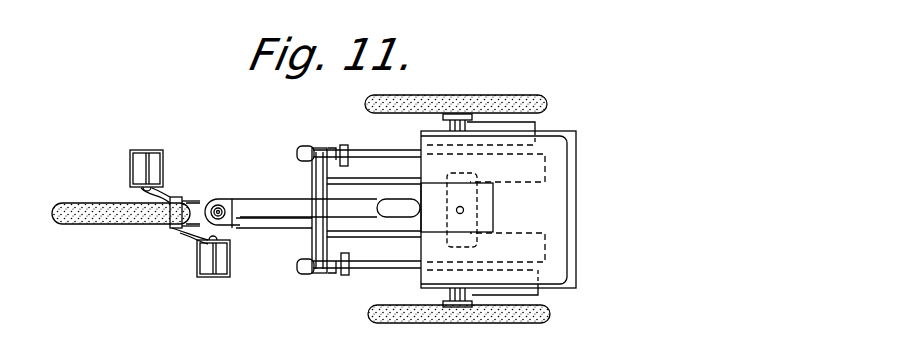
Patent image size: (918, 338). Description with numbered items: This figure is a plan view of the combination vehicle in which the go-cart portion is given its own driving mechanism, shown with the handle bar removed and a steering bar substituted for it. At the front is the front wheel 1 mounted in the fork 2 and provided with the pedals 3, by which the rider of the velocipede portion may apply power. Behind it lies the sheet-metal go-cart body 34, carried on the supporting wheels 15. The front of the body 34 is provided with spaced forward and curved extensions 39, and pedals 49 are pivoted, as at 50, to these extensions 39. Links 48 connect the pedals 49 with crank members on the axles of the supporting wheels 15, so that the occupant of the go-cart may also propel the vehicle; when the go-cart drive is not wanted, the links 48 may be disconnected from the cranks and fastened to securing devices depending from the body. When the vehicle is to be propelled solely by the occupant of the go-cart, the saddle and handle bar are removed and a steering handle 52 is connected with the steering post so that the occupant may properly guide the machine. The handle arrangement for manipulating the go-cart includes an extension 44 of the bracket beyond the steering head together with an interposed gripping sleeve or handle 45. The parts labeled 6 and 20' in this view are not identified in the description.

The front wheel 1 is at (85, 203).
The fork 2 is at (171, 229).
The pedals 3 is at (163, 153).
The frame 6 is at (506, 204).
The supporting wheels 15 is at (512, 95).
The slide block 20' is at (471, 213).
The body 34 is at (577, 213).
The forward and curved extensions 39 is at (374, 210).
The bracket extension 44 is at (213, 204).
The gripping sleeve 45 is at (153, 224).
The links 48 is at (381, 150).
The pedals 49 is at (345, 145).
The pivot 50 is at (316, 152).
The steering handle 52 is at (268, 208).